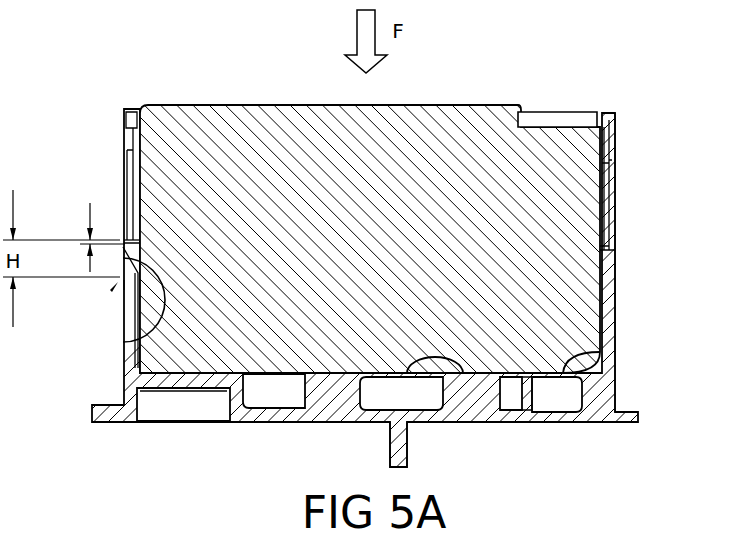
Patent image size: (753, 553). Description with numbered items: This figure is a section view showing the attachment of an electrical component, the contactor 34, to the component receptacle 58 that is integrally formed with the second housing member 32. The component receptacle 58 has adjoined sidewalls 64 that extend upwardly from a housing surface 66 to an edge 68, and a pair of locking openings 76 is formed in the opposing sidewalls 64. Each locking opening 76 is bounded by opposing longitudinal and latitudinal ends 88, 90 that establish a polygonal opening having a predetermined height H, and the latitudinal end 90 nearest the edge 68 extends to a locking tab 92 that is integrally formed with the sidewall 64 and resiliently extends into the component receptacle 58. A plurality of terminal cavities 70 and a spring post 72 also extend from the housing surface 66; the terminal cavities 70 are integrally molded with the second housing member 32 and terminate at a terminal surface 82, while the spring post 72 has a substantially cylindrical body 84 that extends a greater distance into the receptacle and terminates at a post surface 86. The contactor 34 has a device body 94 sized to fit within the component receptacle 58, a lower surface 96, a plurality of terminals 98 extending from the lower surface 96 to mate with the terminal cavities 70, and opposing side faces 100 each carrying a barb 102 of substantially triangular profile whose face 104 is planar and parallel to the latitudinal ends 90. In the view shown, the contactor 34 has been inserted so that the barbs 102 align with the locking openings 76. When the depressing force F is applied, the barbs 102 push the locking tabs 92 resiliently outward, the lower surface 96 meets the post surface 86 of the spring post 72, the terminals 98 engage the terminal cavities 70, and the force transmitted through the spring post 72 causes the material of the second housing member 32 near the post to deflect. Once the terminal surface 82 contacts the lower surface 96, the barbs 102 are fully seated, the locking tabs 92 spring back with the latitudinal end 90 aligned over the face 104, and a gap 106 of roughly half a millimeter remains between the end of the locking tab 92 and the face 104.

The second housing member 32 is at (560, 418).
The contactor 34 is at (268, 118).
The component receptacle 58 is at (611, 325).
The sidewalls 64 is at (612, 163).
The housing surface 66 is at (330, 395).
The edge 68 is at (612, 115).
The terminal cavities 70 is at (565, 393).
The spring post 72 is at (513, 381).
The locking openings 76 is at (110, 289).
The terminal surface 82 is at (568, 376).
The cylindrical body 84 is at (485, 398).
The post surface 86 is at (417, 363).
The longitudinal ends 88 is at (611, 277).
The latitudinal ends 90 is at (124, 307).
The locking tab 92 is at (615, 192).
The device body 94 is at (483, 117).
The lower surface 96 is at (302, 374).
The terminals 98 is at (538, 395).
The side faces 100 is at (604, 146).
The barb 102 is at (608, 250).
The face 104 is at (125, 160).
The gap 106 is at (90, 203).